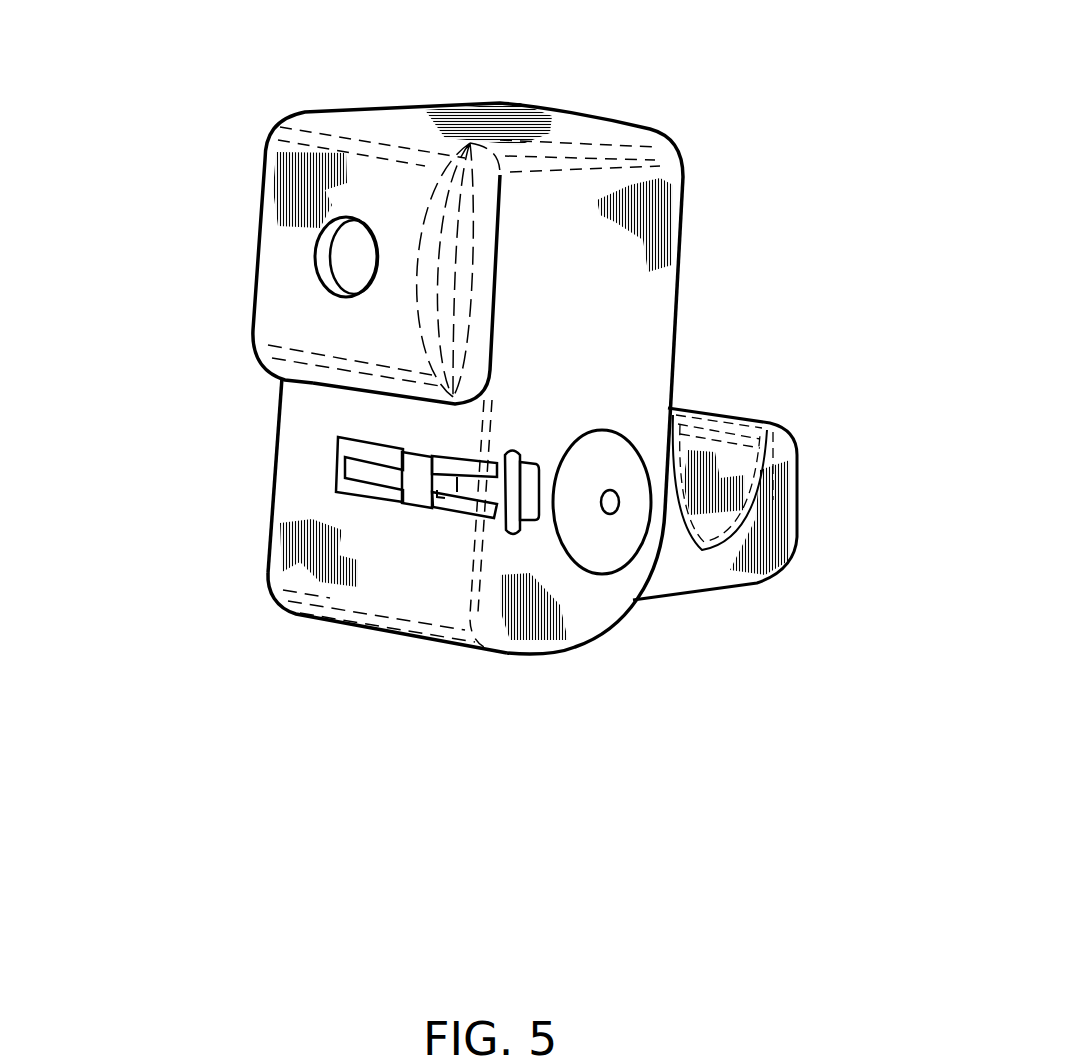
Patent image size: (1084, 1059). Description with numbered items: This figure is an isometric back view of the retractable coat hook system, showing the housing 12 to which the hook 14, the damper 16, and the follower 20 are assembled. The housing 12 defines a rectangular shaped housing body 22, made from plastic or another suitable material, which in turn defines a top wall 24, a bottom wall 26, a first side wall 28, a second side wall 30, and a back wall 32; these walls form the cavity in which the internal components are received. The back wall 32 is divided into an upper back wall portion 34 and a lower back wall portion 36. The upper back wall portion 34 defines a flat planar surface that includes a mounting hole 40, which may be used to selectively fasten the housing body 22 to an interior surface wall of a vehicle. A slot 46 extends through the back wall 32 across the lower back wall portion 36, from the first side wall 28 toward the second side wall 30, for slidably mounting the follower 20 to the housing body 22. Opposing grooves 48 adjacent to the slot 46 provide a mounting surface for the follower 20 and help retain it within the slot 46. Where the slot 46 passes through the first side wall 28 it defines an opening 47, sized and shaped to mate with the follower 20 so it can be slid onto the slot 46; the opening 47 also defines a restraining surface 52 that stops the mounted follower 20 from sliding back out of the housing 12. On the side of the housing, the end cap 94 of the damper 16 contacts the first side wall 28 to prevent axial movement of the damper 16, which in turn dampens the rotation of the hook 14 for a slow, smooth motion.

The housing 12 is at (272, 178).
The hook 14 is at (752, 577).
The damper 16 is at (607, 543).
The follower 20 is at (412, 485).
The housing body 22 is at (670, 212).
The top wall 24 is at (403, 118).
The bottom wall 26 is at (407, 640).
The first side wall 28 is at (650, 367).
The second side wall 30 is at (273, 452).
The back wall 32 is at (300, 485).
The upper back wall portion 34 is at (290, 299).
The lower back wall portion 36 is at (277, 567).
The mounting hole 40 is at (343, 262).
The slot 46 is at (472, 487).
The opening 47 is at (505, 527).
The opposing grooves 48 is at (358, 450).
The restraining surface 52 is at (520, 522).
The end cap 94 is at (637, 470).